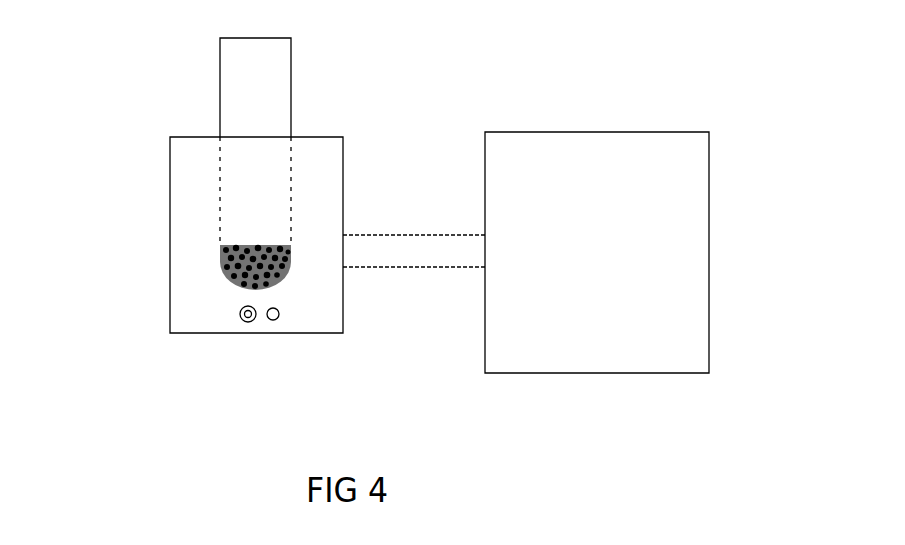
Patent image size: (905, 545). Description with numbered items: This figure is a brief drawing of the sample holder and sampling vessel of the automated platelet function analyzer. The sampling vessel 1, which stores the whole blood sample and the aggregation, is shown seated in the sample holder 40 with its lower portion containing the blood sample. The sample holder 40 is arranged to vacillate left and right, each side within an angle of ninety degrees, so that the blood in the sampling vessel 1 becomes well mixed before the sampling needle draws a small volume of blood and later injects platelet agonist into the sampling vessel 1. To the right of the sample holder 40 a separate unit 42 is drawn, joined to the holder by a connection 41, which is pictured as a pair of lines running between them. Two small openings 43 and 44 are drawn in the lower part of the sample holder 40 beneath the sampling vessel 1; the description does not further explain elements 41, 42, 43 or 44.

The sampling vessel 1 is at (236, 78).
The sample holder 40 is at (188, 280).
The connection line 41 is at (413, 235).
The measuring unit 42 is at (678, 263).
The inlet 43 is at (244, 321).
The outlet 44 is at (271, 320).